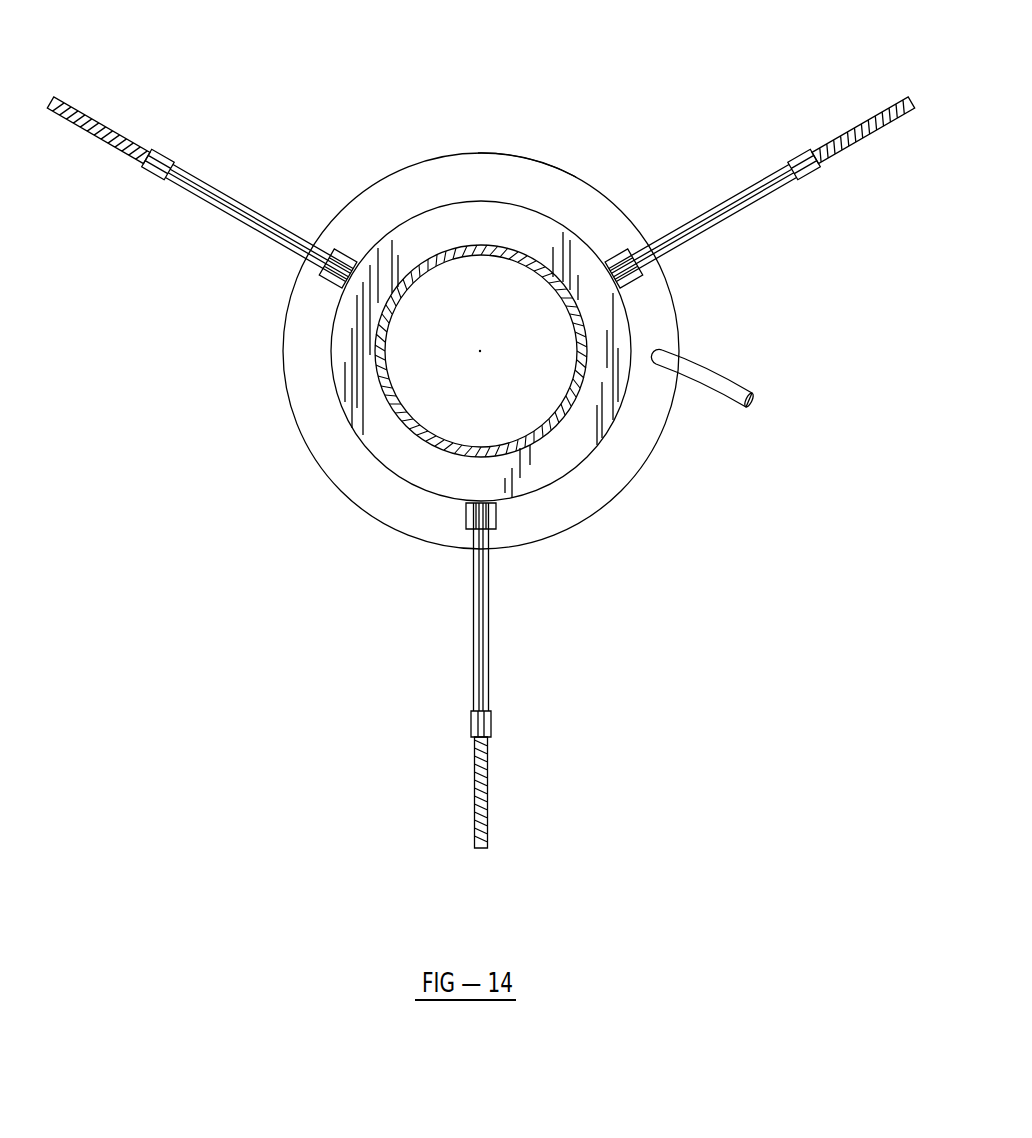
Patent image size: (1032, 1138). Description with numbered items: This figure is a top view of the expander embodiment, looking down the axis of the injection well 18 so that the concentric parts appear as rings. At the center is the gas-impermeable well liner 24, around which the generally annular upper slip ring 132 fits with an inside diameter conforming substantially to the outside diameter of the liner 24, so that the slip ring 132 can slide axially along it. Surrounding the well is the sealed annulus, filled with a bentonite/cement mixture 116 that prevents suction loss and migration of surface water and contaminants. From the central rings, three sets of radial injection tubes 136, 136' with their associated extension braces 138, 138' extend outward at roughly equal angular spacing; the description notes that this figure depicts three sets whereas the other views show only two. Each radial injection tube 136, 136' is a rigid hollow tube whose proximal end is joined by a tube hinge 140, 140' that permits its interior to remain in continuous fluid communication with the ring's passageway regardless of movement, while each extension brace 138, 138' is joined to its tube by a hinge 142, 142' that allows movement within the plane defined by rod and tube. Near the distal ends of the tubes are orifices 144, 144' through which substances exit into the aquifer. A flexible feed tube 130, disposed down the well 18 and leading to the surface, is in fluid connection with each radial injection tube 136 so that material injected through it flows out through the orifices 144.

The injection well 18 is at (527, 152).
The well liner 24 is at (533, 258).
The bentonite/cement mixture 116 is at (335, 462).
The flexible feed tube 130 is at (715, 378).
The upper slip ring 132 is at (343, 385).
The radial injection tube 136 is at (257, 226).
The extension brace 138 is at (259, 195).
The tube hinge 140 is at (256, 299).
The hinge 142 is at (117, 209).
The orifice 144 is at (121, 95).
The radial injection tube 136' is at (714, 151).
The extension brace 138' is at (703, 192).
The tube hinge 140' is at (706, 274).
The hinge 142' is at (851, 180).
The orifice 144' is at (863, 97).